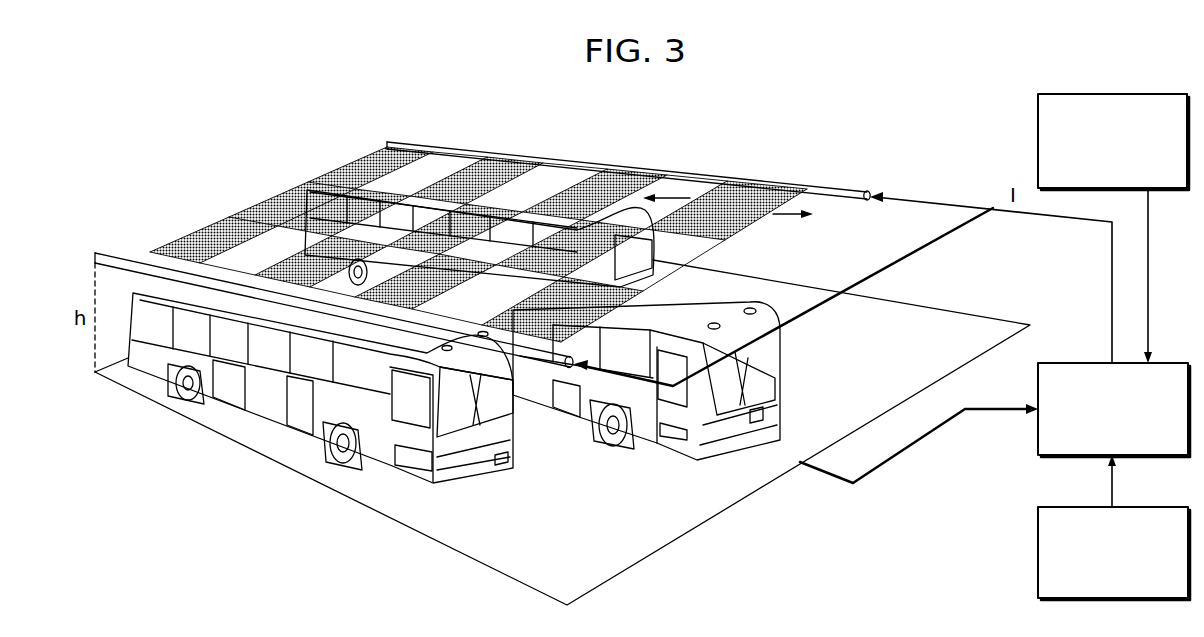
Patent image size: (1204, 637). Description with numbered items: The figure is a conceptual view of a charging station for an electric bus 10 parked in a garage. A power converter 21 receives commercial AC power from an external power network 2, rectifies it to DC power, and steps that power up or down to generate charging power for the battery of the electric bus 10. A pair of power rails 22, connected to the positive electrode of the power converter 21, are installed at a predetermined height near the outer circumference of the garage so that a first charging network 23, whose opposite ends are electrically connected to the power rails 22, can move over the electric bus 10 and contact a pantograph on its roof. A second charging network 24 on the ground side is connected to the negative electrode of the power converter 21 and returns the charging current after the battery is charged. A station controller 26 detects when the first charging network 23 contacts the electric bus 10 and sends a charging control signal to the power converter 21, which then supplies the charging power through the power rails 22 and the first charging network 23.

The external power network 2 is at (1038, 553).
The electric bus 10 is at (567, 403).
The power converter 21 is at (1038, 432).
The power rail 22 is at (385, 143).
The first charging network 23 is at (640, 175).
The second charging network 24 is at (653, 537).
The station controller 26 is at (1038, 140).